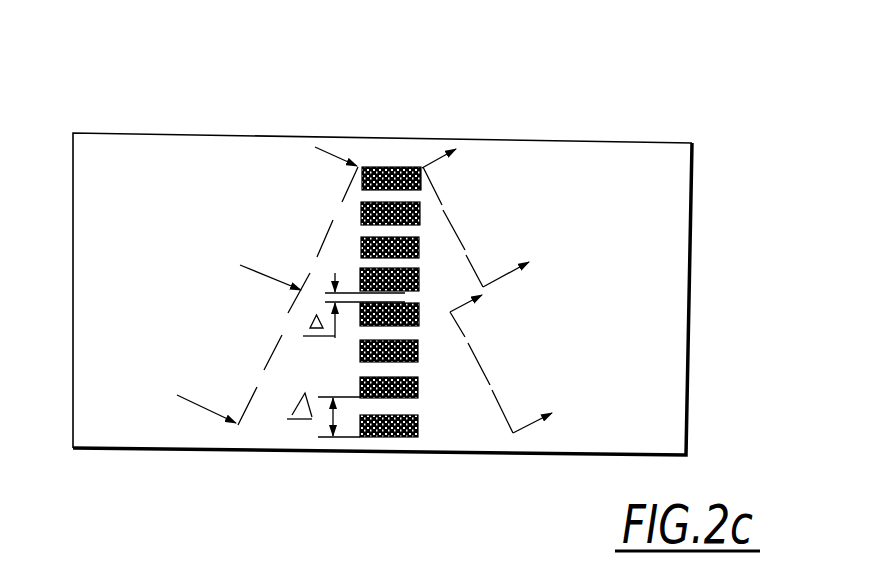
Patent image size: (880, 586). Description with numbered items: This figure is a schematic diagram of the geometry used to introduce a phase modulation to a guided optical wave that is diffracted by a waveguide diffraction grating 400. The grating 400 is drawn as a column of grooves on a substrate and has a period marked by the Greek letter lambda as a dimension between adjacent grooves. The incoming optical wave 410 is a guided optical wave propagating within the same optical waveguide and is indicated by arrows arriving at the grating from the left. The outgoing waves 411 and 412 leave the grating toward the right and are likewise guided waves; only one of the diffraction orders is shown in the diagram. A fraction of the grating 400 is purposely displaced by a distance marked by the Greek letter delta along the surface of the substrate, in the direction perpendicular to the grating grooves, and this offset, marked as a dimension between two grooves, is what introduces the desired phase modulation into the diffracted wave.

The waveguide diffraction grating 400 is at (390, 167).
The incoming optical wave 410 is at (310, 213).
The outgoing wave 411 is at (447, 192).
The outgoing wave 412 is at (502, 377).